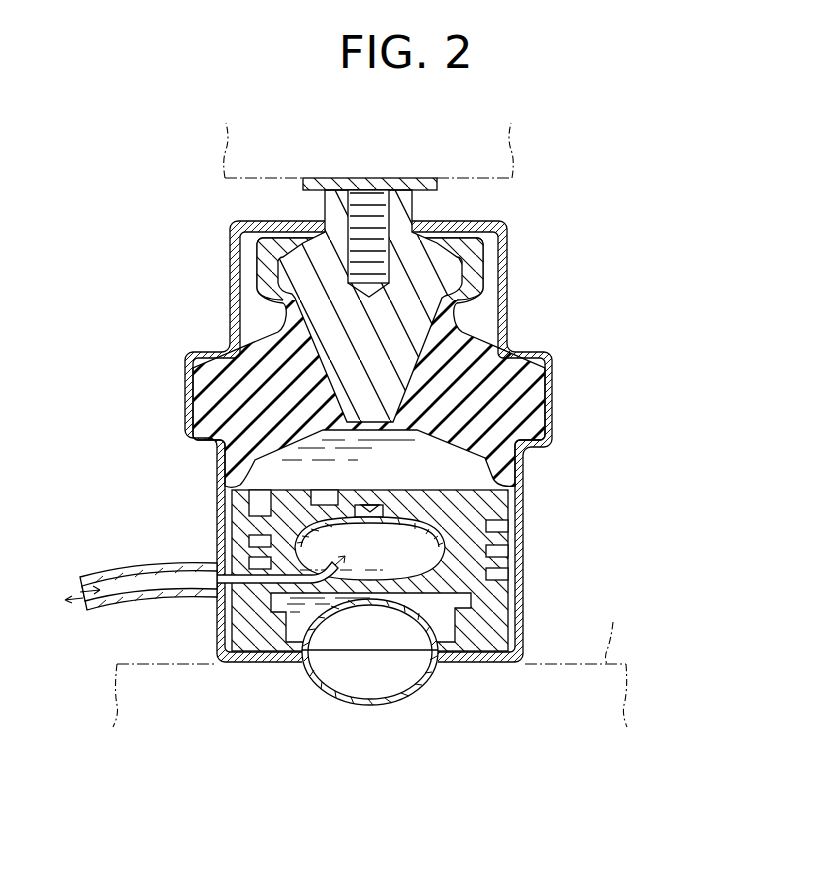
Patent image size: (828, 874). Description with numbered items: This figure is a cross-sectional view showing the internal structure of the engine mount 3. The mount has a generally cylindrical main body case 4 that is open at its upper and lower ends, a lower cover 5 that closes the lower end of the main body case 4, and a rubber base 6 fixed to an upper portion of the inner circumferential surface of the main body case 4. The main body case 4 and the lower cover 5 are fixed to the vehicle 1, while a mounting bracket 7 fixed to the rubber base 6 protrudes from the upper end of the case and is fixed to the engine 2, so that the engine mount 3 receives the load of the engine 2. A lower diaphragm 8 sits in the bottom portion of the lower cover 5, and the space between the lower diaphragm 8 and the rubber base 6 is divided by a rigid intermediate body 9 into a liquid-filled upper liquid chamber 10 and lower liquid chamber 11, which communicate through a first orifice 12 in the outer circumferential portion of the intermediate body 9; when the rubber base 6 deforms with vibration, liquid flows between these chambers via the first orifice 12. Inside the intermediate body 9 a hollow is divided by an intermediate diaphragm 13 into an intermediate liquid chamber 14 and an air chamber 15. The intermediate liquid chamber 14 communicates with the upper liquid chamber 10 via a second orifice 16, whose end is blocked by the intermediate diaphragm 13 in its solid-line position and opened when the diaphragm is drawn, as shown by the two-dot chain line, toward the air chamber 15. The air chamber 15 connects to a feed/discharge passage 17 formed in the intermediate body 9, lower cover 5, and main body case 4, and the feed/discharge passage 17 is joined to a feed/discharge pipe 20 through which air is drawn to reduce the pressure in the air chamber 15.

The vehicle 1 is at (370, 656).
The engine 2 is at (514, 144).
The engine mount 3 is at (553, 238).
The main body case 4 is at (555, 372).
The lower cover 5 is at (515, 492).
The rubber base 6 is at (533, 406).
The mounting bracket 7 is at (404, 198).
The lower diaphragm 8 is at (339, 600).
The intermediate body 9 is at (453, 493).
The upper liquid chamber 10 is at (258, 472).
The lower liquid chamber 11 is at (308, 627).
The first orifice 12 is at (261, 494).
The intermediate diaphragm 13 is at (421, 551).
The intermediate liquid chamber 14 is at (315, 524).
The air chamber 15 is at (383, 562).
The second orifice 16 is at (335, 494).
The feed/discharge passage 17 is at (205, 593).
The feed/discharge pipe 20 is at (133, 562).